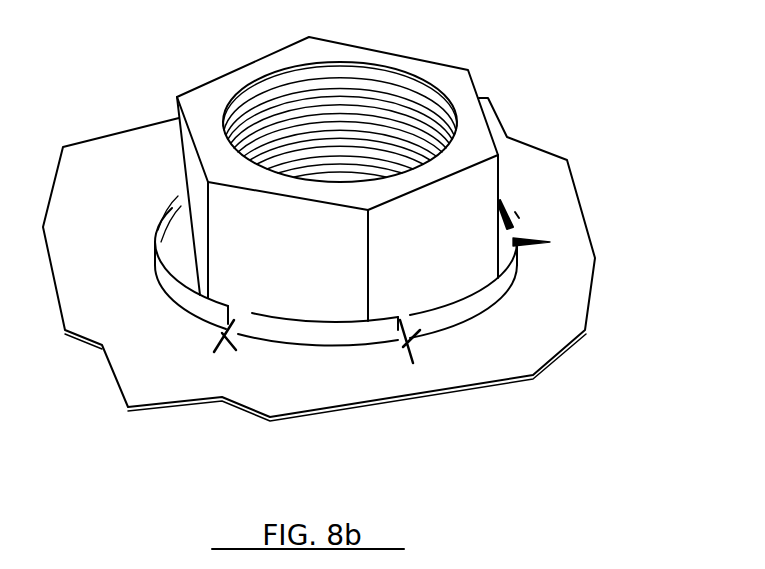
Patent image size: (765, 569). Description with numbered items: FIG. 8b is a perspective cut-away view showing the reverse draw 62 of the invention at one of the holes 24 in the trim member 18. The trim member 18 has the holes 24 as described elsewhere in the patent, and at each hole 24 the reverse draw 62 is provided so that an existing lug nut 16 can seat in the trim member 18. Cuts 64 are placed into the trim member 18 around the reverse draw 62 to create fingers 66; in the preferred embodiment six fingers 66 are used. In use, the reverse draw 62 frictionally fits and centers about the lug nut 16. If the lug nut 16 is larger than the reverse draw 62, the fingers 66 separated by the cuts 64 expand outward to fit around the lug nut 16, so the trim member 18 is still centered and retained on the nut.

The lug nut 16 is at (458, 82).
The trim member 18 is at (535, 348).
The holes 24 is at (493, 277).
The reverse draw 62 is at (512, 222).
The cuts 64 is at (550, 242).
The fingers 66 is at (519, 212).